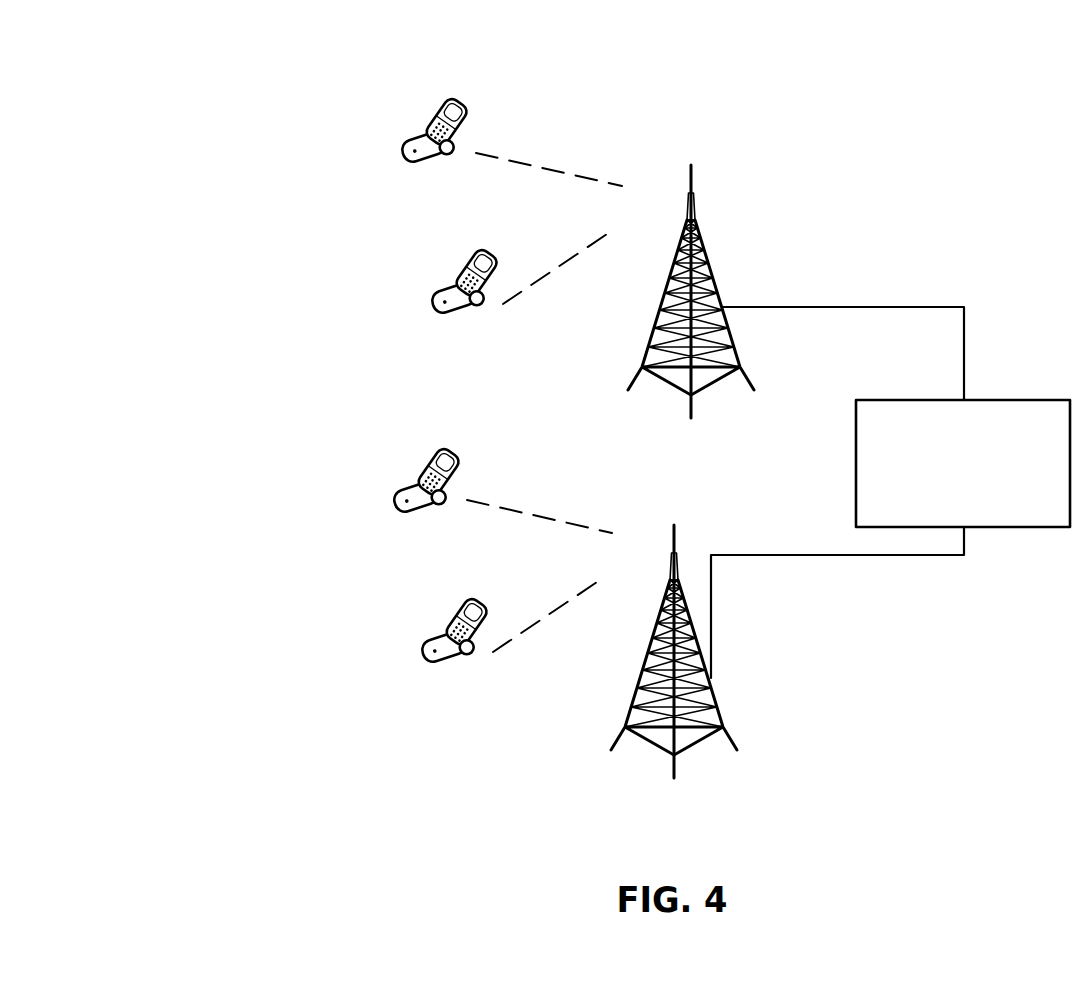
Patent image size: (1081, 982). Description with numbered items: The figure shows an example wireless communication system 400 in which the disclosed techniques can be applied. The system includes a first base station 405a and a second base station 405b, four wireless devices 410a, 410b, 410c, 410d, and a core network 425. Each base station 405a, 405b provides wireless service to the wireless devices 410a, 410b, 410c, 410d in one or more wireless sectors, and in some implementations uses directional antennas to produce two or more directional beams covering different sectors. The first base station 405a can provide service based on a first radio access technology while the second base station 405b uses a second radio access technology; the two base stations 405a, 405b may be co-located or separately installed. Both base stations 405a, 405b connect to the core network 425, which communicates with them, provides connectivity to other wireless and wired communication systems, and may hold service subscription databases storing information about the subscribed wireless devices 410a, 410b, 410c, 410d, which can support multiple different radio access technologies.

The wireless communication system 400 is at (211, 33).
The wireless device 410a is at (432, 103).
The wireless device 410b is at (462, 255).
The wireless device 410c is at (423, 452).
The wireless device 410d is at (452, 602).
The first base station 405a is at (707, 247).
The second base station 405b is at (678, 563).
The core network 425 is at (870, 400).